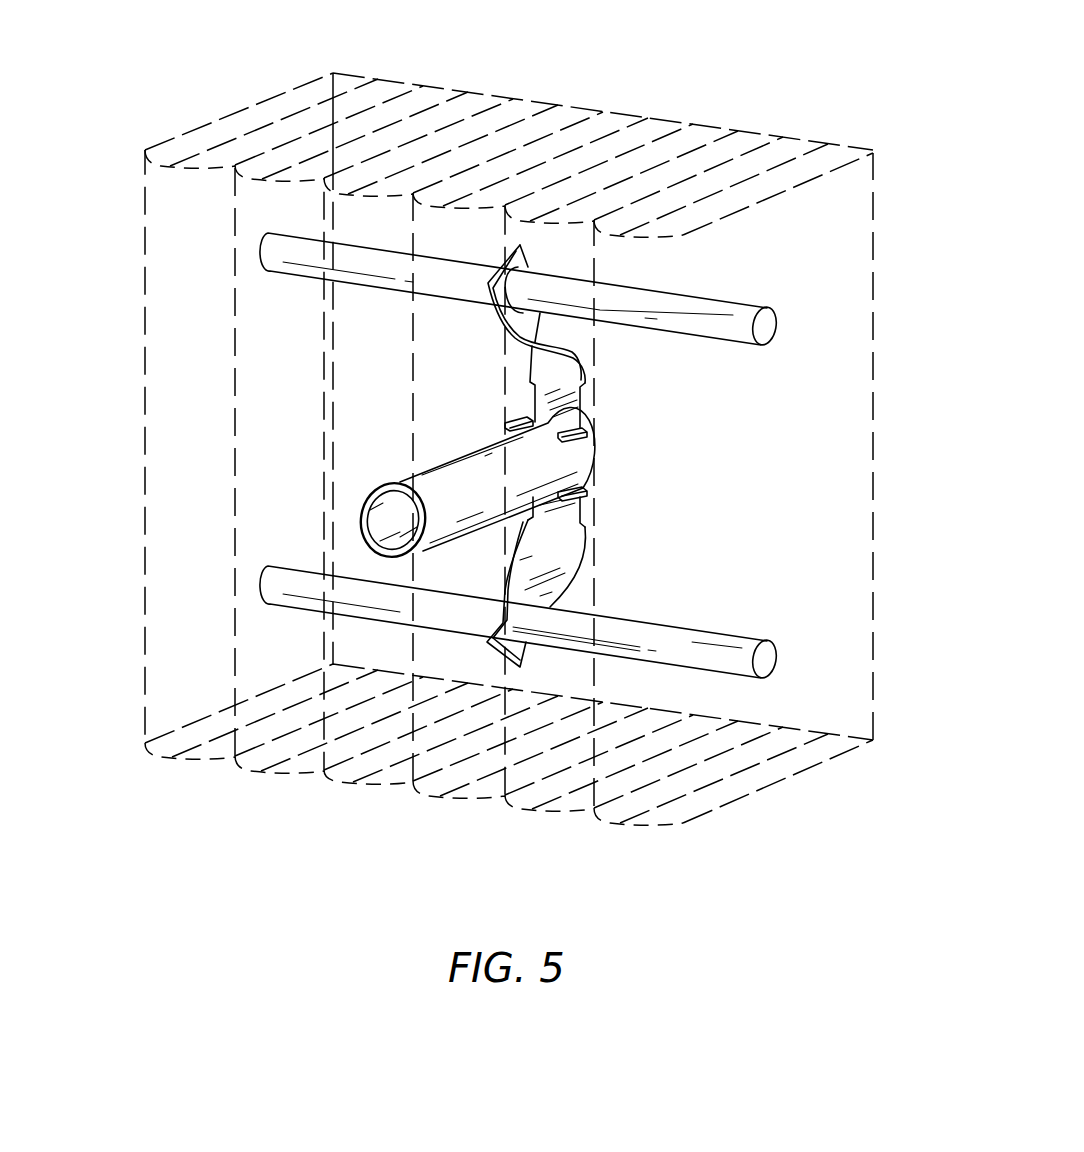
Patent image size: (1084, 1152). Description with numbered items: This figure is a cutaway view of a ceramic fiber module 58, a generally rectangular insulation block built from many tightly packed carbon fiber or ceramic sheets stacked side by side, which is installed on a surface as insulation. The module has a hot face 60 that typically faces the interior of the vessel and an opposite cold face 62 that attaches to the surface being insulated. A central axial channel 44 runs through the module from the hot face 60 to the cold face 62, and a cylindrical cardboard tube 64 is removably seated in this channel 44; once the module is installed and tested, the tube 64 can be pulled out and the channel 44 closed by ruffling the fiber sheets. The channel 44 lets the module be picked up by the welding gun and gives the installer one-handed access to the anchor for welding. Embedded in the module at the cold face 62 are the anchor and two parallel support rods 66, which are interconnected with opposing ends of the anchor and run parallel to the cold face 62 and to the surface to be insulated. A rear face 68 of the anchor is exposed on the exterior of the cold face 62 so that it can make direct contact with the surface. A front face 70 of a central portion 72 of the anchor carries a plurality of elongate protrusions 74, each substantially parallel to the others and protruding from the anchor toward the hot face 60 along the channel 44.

The central axial channel 44 is at (388, 525).
The ceramic fiber module 58 is at (840, 209).
The hot face 60 is at (182, 672).
The cold face 62 is at (422, 100).
The cylindrical cardboard tube 64 is at (478, 472).
The support rods 66 is at (277, 253).
The rear face 68 is at (582, 414).
The front face 70 is at (570, 380).
The central portion 72 is at (580, 480).
The elongate protrusions 74 is at (510, 420).